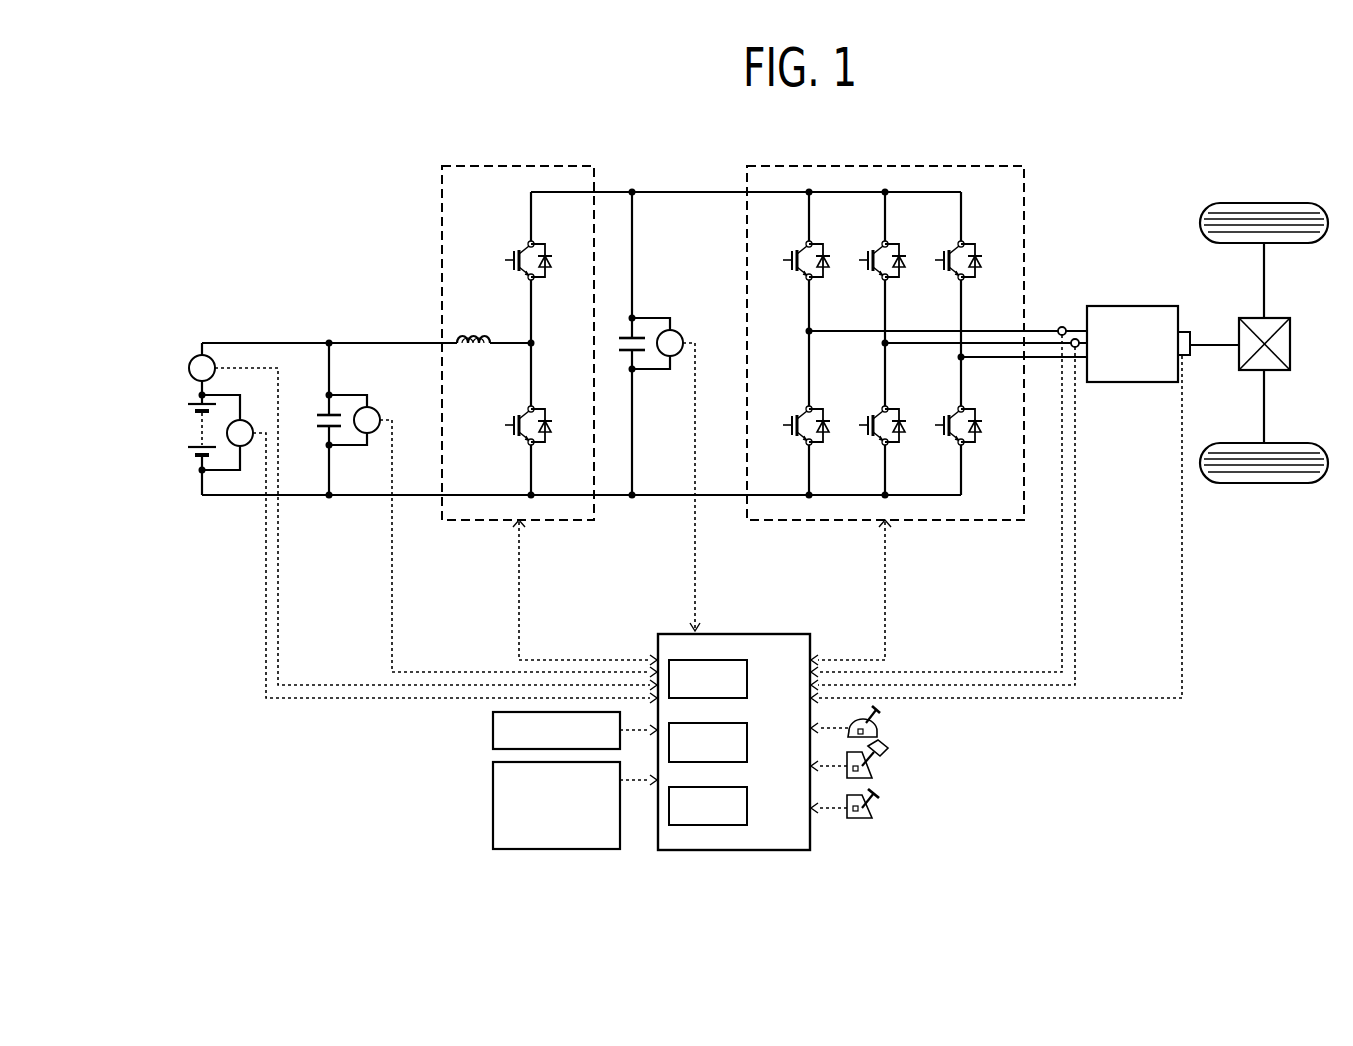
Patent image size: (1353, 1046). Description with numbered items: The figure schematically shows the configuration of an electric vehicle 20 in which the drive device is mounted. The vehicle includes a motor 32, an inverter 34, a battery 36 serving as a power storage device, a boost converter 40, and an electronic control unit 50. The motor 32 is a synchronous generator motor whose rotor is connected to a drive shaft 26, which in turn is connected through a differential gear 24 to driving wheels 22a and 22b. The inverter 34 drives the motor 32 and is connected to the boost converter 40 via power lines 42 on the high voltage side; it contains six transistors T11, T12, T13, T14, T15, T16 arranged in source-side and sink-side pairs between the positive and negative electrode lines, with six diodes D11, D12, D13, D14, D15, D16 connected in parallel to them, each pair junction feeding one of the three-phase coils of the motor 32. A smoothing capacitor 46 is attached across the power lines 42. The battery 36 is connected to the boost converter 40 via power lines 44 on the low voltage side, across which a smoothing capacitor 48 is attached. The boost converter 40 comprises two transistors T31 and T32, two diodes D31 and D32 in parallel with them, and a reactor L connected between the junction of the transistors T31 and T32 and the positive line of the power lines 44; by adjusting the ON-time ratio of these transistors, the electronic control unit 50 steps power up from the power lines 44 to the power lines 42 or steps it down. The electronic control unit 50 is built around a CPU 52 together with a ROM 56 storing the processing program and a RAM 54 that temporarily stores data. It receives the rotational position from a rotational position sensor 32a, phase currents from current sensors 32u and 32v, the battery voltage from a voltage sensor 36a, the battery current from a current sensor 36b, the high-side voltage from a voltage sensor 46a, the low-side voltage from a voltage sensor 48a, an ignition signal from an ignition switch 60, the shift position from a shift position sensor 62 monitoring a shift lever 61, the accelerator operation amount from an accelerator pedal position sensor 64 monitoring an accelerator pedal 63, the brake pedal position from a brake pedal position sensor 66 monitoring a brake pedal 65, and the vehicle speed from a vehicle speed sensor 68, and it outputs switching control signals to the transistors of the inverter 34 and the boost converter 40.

The electric vehicle 20 is at (1176, 142).
The driving wheel 22a is at (1265, 200).
The driving wheel 22b is at (1263, 485).
The differential gear 24 is at (1275, 318).
The drive shaft 26 is at (1214, 343).
The motor 32 is at (1138, 305).
The rotational position sensor 32a is at (1184, 330).
The current sensor 32u is at (1061, 326).
The current sensor 32v is at (1076, 338).
The inverter 34 is at (884, 165).
The battery 36 is at (198, 459).
The voltage sensor 36a is at (242, 420).
The current sensor 36b is at (202, 355).
The boost converter 40 is at (520, 165).
The power lines on a high voltage side 42 is at (735, 194).
The power lines on a low voltage side 44 is at (423, 346).
The smoothing capacitor 46 is at (624, 336).
The voltage sensor 46a is at (676, 330).
The smoothing capacitor 48 is at (323, 413).
The voltage sensor 48a is at (370, 406).
The electronic control unit 50 is at (733, 632).
The CPU 52 is at (747, 678).
The RAM 54 is at (747, 742).
The ROM 56 is at (747, 805).
The ignition switch 60 is at (493, 730).
The shift lever 61 is at (882, 720).
The shift position sensor 62 is at (878, 731).
The accelerator pedal 63 is at (883, 753).
The accelerator pedal position sensor 64 is at (872, 773).
The brake pedal 65 is at (880, 800).
The brake pedal position sensor 66 is at (872, 810).
The vehicle speed sensor 68 is at (493, 781).
The reactor L is at (482, 333).
The transistor T11 is at (790, 252).
The transistor T12 is at (866, 252).
The transistor T13 is at (942, 252).
The transistor T14 is at (790, 417).
The transistor T15 is at (866, 417).
The transistor T16 is at (942, 417).
The diode D11 is at (830, 267).
The diode D12 is at (906, 267).
The diode D13 is at (982, 267).
The diode D14 is at (830, 432).
The diode D15 is at (906, 432).
The diode D16 is at (982, 432).
The transistor T31 is at (512, 252).
The transistor T32 is at (512, 417).
The diode D31 is at (552, 267).
The diode D32 is at (552, 434).